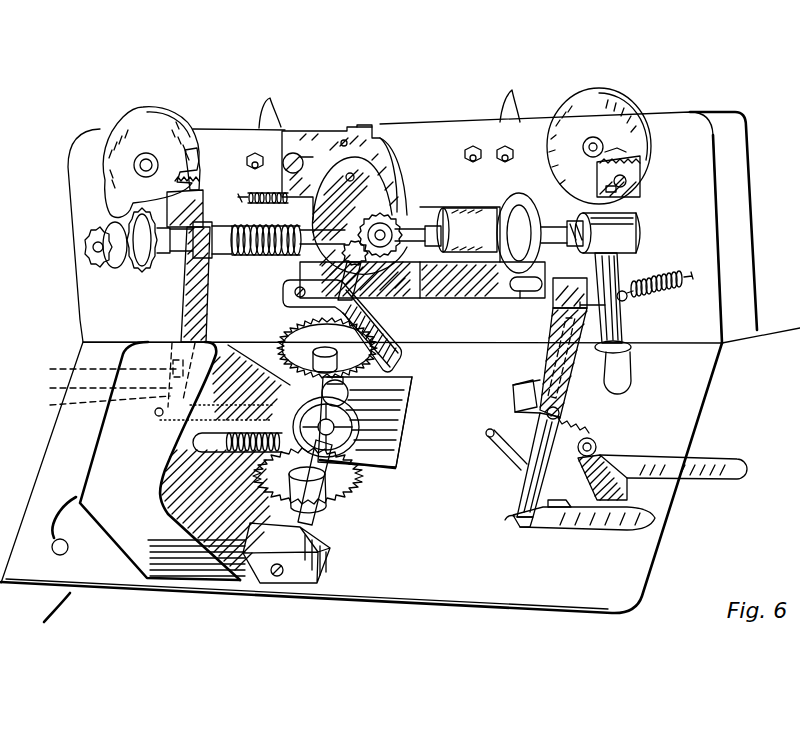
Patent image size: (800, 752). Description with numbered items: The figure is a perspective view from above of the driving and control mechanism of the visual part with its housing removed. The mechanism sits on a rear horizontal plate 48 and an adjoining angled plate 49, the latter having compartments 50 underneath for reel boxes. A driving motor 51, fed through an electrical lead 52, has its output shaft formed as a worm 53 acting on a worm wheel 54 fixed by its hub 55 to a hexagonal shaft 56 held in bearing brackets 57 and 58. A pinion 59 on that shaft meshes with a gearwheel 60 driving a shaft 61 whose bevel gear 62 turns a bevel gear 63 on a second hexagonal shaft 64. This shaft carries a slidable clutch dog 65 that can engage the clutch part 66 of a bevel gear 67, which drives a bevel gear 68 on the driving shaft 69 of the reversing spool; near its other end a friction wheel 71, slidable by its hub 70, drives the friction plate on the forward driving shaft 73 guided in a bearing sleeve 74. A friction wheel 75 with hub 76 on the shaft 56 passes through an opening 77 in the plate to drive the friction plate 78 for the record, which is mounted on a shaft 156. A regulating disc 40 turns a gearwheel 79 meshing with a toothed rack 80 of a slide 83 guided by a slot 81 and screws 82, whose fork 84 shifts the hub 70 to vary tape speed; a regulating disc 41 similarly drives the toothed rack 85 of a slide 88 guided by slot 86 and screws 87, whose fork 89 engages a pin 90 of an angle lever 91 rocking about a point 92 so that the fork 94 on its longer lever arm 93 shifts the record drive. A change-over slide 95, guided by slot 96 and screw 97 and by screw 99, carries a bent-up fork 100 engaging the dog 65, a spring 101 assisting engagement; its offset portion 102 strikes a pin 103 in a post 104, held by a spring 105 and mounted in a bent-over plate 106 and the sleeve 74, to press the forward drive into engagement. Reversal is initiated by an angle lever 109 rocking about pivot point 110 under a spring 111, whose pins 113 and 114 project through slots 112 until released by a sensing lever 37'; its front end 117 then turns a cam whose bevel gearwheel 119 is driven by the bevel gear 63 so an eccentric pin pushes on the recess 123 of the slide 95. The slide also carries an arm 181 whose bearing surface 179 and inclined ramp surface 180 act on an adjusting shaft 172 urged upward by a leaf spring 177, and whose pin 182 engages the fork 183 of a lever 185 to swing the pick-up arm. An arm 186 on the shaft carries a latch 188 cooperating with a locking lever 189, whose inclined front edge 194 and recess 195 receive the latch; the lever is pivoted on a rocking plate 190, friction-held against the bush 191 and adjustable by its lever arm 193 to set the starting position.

The sensing lever 37' is at (521, 106).
The regulating disc 40 is at (620, 112).
The regulating disc 41 is at (122, 116).
The rear horizontal plate 48 is at (398, 604).
The plate 49 is at (441, 122).
The compartments 50 is at (738, 148).
The driving motor 51 is at (186, 552).
The electrical lead 52 is at (66, 610).
The worm 53 is at (235, 460).
The worm wheel 54 is at (348, 500).
The hub 55 is at (328, 508).
The hexagonal shaft 56 is at (305, 520).
The bearing bracket 57 is at (326, 552).
The bearing bracket 58 is at (400, 358).
The pinion 59 is at (410, 390).
The gearwheel 60 is at (283, 334).
The shaft 61 is at (347, 278).
The bevel gear 62 is at (372, 280).
The bevel gear 63 is at (396, 220).
The hexagonal shaft 64 is at (433, 228).
The clutch dog 65 is at (178, 254).
The clutch part 66 is at (160, 256).
The bevel gear 67 is at (135, 270).
The bevel gear 68 is at (83, 263).
The driving shaft 69 is at (86, 248).
The hub 70 is at (453, 213).
The friction wheel 71 is at (500, 205).
The driving shaft 73 is at (638, 234).
The bearing sleeve 74 is at (636, 221).
The friction wheel 75 is at (392, 430).
The hub 76 is at (385, 400).
The opening 77 is at (395, 467).
The friction plate 78 is at (400, 448).
The gearwheel 79 is at (620, 150).
The toothed rack 80 is at (641, 158).
The slot 81 is at (630, 187).
The screws 82 is at (627, 180).
The slide 83 is at (513, 160).
The fork 84 is at (490, 296).
The toothed rack 85 is at (197, 170).
The slot 86 is at (201, 180).
The screws 87 is at (200, 195).
The slide 88 is at (208, 300).
The fork 89 is at (105, 368).
The pin 90 is at (99, 388).
The angle lever 91 is at (98, 405).
The point 92 is at (154, 416).
The longer lever arm 93 is at (200, 443).
The fork 94 is at (380, 412).
The slide 95 is at (278, 257).
The slot 96 is at (527, 290).
The screw 97 is at (537, 296).
The screw 99 is at (364, 158).
The bent-up fork 100 is at (222, 255).
The spring 101 is at (251, 257).
The offset portion 102 is at (572, 290).
The pin 103 is at (598, 308).
The post 104 is at (622, 325).
The spring 105 is at (667, 289).
The bent-over plate 106 is at (631, 350).
The angle lever 109 is at (309, 144).
The pivot point 110 is at (292, 152).
The spring 111 is at (263, 178).
The slots 112 is at (362, 125).
The pin 113 is at (344, 139).
The pin 114 is at (384, 132).
The front end 117 is at (398, 190).
The bevel gearwheel 119 is at (368, 217).
The recess 123 is at (362, 185).
The shaft 156 is at (295, 293).
The adjusting shaft 172 is at (592, 440).
The leaf spring 177 is at (515, 460).
The bearing surface 179 is at (520, 416).
The inclined ramp surface 180 is at (520, 395).
The arm 181 is at (515, 385).
The pin 182 is at (550, 352).
The fork 183 is at (545, 370).
The lever 185 is at (560, 407).
The arm 186 is at (528, 480).
The latch 188 is at (528, 528).
The locking lever 189 is at (596, 528).
The rocking plate 190 is at (618, 490).
The bush 191 is at (597, 447).
The lever arm 193 is at (725, 477).
The inclined front edge 194 is at (505, 518).
The recess 195 is at (558, 528).